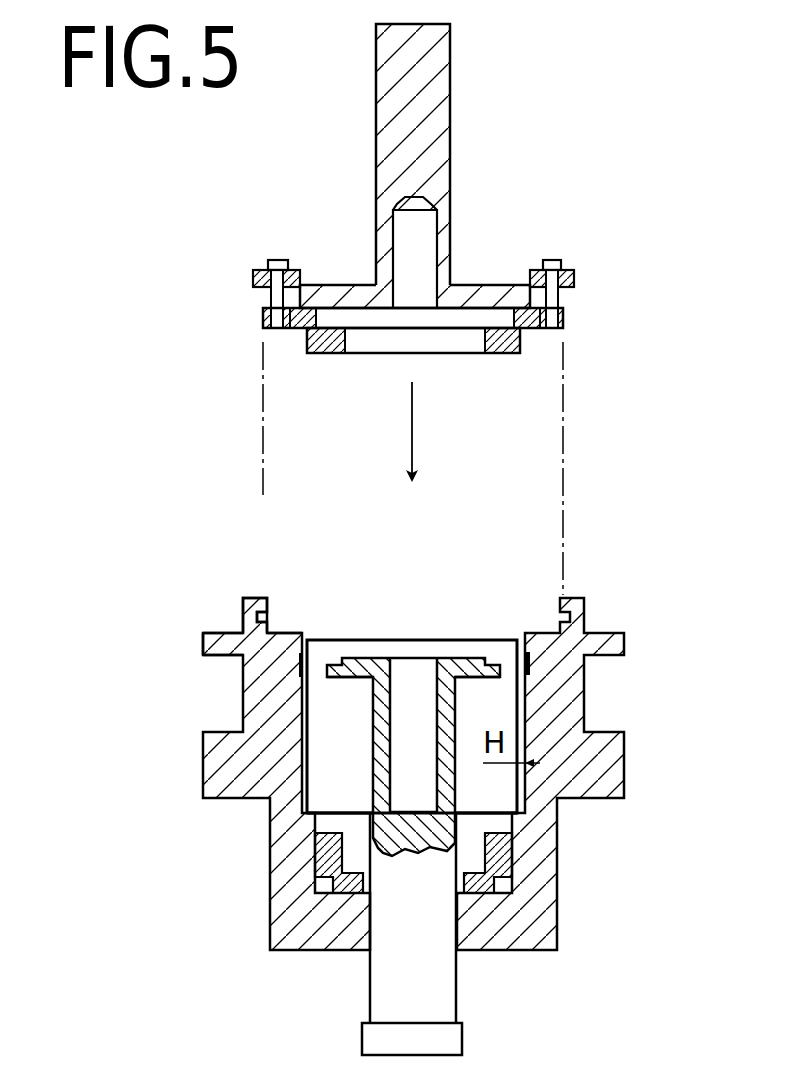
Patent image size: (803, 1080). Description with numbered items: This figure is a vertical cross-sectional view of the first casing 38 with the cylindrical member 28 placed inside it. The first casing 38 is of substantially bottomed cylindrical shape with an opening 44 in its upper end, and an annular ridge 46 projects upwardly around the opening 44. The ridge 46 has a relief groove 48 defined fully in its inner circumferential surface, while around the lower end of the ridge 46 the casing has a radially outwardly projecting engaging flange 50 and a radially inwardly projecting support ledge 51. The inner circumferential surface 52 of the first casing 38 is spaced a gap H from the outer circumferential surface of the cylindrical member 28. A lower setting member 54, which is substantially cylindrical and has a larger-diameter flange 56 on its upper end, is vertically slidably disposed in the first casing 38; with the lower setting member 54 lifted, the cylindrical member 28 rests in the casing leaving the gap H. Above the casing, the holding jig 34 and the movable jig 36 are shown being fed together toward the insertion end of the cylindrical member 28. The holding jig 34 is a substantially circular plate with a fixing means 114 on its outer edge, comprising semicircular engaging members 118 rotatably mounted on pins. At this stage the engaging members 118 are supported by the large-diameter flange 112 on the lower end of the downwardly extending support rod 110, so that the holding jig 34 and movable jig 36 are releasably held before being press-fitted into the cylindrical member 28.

The support rod 110 is at (456, 88).
The large-diameter flange 112 is at (484, 289).
The fixing means 114 is at (425, 232).
The engaging members 118 is at (256, 270).
The holding jig 34 is at (579, 311).
The movable jig 36 is at (498, 359).
The first casing 38 is at (610, 707).
The annular ridge 46 is at (243, 600).
The relief groove 48 is at (268, 613).
The engaging flange 50 is at (207, 650).
The support ledge 51 is at (274, 640).
The opening 44 is at (510, 608).
The cylindrical member 28 is at (403, 640).
The larger-diameter flange 56 is at (334, 678).
The inner circumferential surface 52 is at (505, 788).
The lower setting member 54 is at (376, 996).